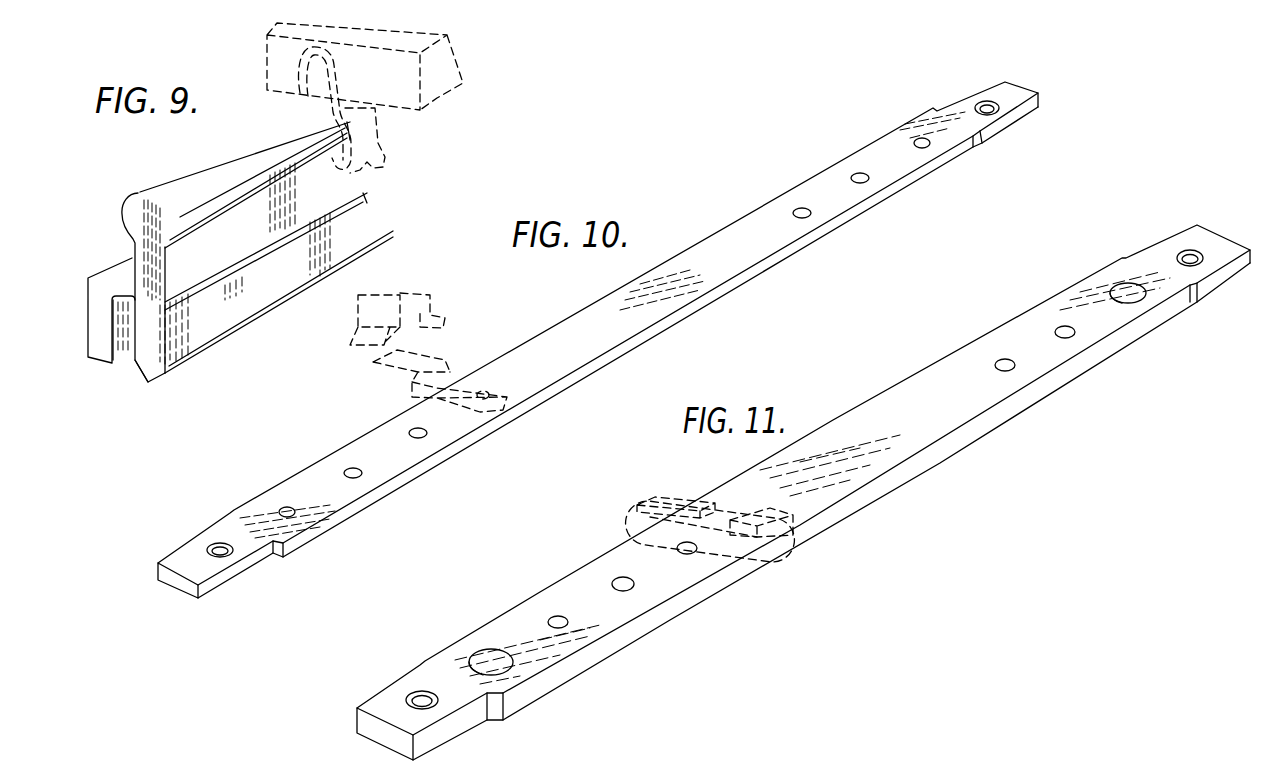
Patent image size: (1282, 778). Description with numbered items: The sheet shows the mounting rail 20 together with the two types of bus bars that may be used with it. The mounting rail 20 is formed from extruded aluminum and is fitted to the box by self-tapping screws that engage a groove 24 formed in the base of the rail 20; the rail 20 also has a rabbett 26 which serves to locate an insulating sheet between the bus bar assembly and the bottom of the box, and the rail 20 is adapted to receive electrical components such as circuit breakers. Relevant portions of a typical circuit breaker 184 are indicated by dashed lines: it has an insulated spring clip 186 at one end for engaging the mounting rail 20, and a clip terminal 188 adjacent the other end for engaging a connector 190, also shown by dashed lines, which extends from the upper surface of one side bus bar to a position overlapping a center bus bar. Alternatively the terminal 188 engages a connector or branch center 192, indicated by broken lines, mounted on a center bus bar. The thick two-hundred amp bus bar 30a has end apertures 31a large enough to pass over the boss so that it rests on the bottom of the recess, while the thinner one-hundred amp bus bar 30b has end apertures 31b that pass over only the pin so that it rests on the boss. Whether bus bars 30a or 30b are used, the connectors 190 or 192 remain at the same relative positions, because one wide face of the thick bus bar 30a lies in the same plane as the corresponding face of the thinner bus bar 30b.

In FIG. 9, the mounting rail 20 is at (178, 157).
In FIG. 9, the groove 24 is at (128, 352).
In FIG. 9, the rabbett 26 is at (160, 380).
In FIG. 9, the circuit breaker 184 is at (437, 100).
In FIG. 9, the insulated spring clip 186 is at (385, 170).
In FIG. 9, the clip terminal 188 is at (357, 320).
In FIG. 9, the connector 190 is at (407, 390).
In FIG. 11, the 200 amp bus bar 30a is at (906, 369).
In FIG. 10, the 100 amp bus bar 30b is at (746, 208).
In FIG. 11, the hole 31a is at (507, 667).
In FIG. 10, the hole 31b is at (287, 507).
In FIG. 11, the branch center 192 is at (637, 507).